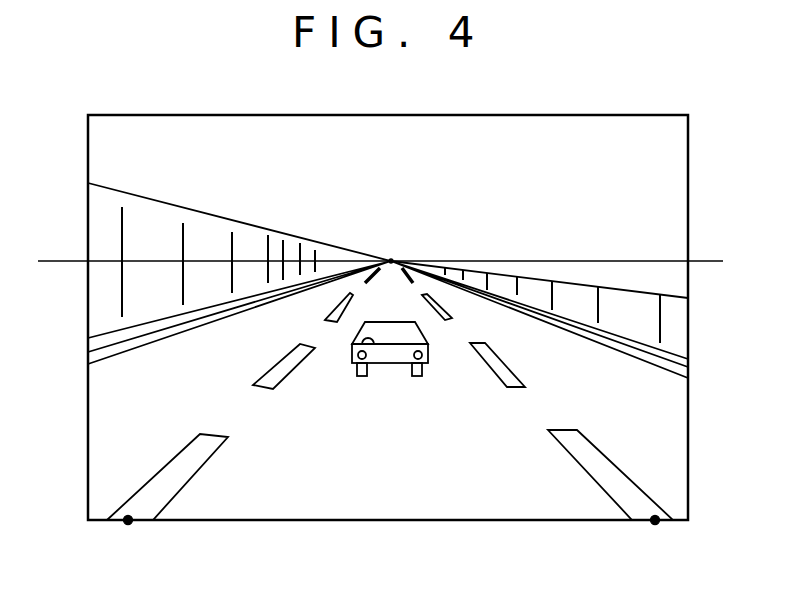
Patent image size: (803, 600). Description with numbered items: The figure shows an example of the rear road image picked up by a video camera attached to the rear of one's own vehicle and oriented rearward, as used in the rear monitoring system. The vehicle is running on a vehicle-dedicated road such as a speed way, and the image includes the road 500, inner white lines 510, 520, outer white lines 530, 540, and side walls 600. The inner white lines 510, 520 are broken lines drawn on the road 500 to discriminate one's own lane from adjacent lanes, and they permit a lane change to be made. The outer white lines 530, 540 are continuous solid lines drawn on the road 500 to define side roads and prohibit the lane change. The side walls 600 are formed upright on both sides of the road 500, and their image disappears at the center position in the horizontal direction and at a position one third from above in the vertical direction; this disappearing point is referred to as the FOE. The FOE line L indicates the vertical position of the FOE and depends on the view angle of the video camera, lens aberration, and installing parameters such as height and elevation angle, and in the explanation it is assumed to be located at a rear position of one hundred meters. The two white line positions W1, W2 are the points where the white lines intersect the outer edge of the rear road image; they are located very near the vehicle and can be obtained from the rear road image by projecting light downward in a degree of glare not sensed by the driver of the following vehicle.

The road 500 is at (412, 505).
The inner white line 510 is at (162, 495).
The inner white line 520 is at (615, 483).
The outer white line 530 is at (95, 364).
The outer white line 540 is at (678, 378).
The side wall 600 is at (105, 234).
The white line position W1 is at (125, 528).
The white line position W2 is at (660, 526).
The element FOE is at (391, 261).
The FOE line L is at (390, 261).